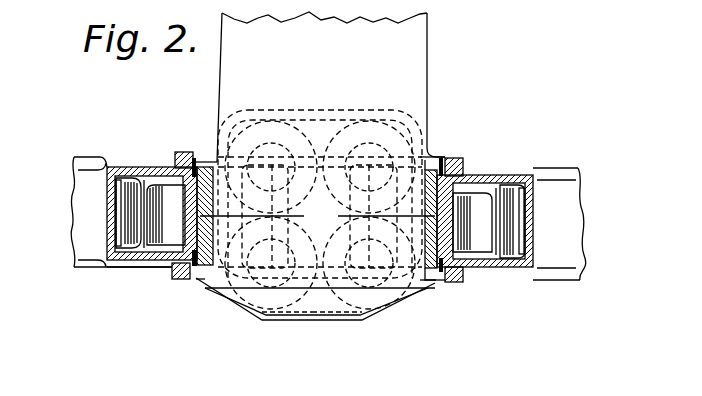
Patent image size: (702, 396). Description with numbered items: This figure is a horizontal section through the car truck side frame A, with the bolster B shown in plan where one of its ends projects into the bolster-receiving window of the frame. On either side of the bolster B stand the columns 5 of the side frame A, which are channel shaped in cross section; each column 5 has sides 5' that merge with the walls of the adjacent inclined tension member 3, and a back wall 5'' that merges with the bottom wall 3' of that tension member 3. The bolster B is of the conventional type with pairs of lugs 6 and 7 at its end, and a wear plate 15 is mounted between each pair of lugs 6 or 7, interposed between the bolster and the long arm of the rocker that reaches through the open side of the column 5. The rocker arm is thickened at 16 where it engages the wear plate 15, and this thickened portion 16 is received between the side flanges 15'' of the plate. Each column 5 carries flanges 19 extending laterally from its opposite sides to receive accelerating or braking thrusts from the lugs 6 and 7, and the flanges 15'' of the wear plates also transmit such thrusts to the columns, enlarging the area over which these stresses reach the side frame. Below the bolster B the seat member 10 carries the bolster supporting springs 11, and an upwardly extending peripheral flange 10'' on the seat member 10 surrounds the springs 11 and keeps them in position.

The inclined tension member 3 is at (324, 218).
The bottom wall of tension member 3' is at (322, 215).
The column 5 is at (313, 218).
The side of column 5' is at (318, 220).
The back wall of column 5'' is at (298, 218).
The bolster lug 6 is at (209, 166).
The bolster lug 7 is at (445, 163).
The seat member 10 is at (254, 312).
The peripheral flange 10'' is at (373, 313).
The bolster supporting spring 11 is at (354, 148).
The wear plate 15 is at (317, 194).
The side flange of wear plate 15'' is at (335, 221).
The thickened portion of rocker arm 16 is at (207, 217).
The flange 19 is at (188, 152).
The car truck side frame A is at (158, 268).
The bolster B is at (320, 150).